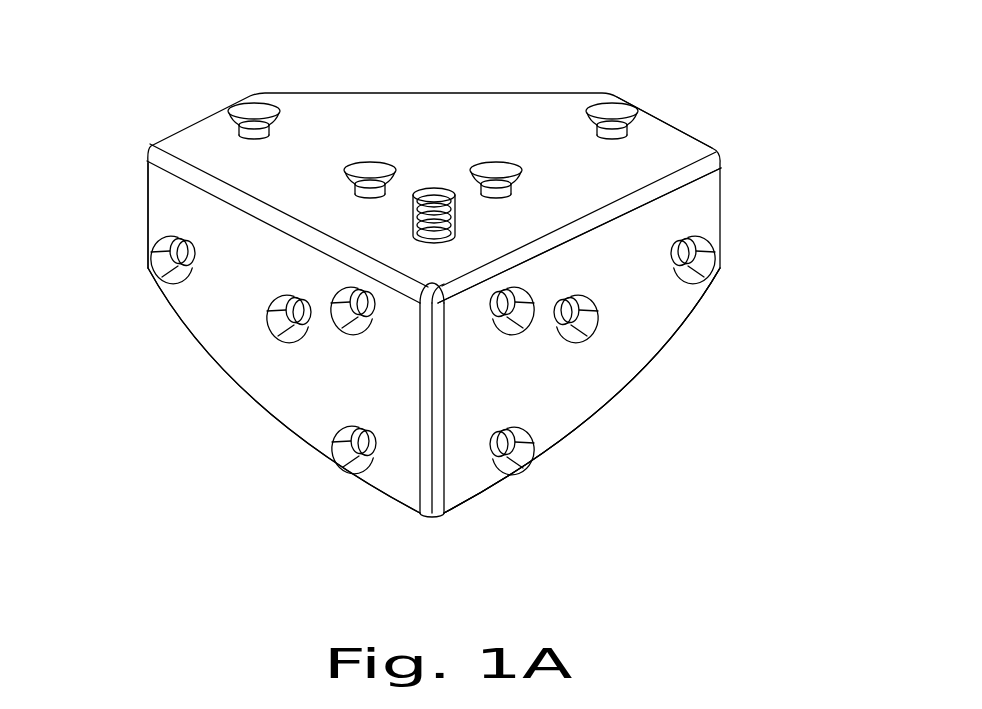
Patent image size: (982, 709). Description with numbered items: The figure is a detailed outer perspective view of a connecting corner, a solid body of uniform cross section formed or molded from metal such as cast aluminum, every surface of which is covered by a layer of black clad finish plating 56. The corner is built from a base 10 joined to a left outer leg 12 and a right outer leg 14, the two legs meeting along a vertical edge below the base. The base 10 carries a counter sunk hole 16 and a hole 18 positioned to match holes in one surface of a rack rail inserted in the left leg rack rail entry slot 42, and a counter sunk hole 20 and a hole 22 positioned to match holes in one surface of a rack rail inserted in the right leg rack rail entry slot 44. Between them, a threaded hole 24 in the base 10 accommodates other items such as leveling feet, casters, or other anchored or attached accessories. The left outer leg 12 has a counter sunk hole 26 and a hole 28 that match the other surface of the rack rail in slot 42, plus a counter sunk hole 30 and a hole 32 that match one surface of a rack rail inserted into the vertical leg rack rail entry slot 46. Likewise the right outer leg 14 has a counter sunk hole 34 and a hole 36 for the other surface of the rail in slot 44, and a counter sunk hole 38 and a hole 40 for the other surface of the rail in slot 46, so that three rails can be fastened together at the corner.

The base 10 is at (415, 92).
The left outer leg 12 is at (242, 383).
The right outer leg 14 is at (630, 381).
The counter sunk hole 16 is at (264, 103).
The hole 18 is at (365, 162).
The counter sunk hole 20 is at (620, 103).
The hole 22 is at (498, 162).
The threaded hole 24 is at (437, 192).
The counter sunk hole 26 is at (155, 260).
The hole 28 is at (270, 320).
The counter sunk hole 30 is at (343, 323).
The hole 32 is at (348, 463).
The counter sunk hole 34 is at (718, 263).
The hole 36 is at (598, 322).
The counter sunk hole 38 is at (522, 325).
The hole 40 is at (525, 468).
The left leg rack rail entry slot 42 is at (148, 200).
The right leg rack rail entry slot 44 is at (673, 120).
The vertical leg rack rail entry slot 46 is at (474, 498).
The plating 56 is at (664, 222).